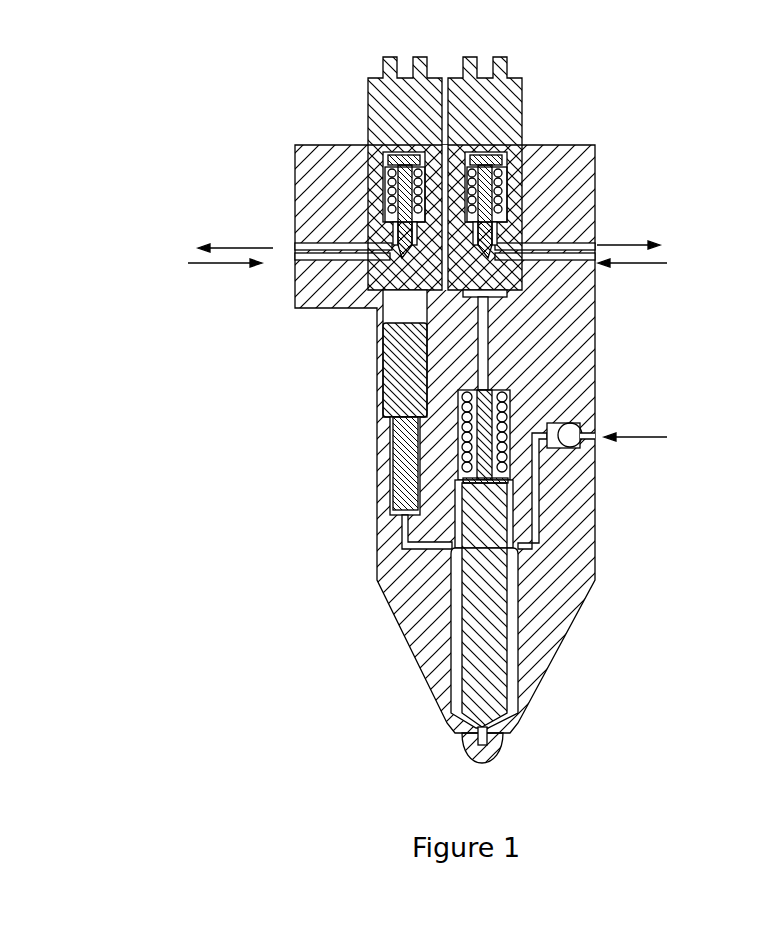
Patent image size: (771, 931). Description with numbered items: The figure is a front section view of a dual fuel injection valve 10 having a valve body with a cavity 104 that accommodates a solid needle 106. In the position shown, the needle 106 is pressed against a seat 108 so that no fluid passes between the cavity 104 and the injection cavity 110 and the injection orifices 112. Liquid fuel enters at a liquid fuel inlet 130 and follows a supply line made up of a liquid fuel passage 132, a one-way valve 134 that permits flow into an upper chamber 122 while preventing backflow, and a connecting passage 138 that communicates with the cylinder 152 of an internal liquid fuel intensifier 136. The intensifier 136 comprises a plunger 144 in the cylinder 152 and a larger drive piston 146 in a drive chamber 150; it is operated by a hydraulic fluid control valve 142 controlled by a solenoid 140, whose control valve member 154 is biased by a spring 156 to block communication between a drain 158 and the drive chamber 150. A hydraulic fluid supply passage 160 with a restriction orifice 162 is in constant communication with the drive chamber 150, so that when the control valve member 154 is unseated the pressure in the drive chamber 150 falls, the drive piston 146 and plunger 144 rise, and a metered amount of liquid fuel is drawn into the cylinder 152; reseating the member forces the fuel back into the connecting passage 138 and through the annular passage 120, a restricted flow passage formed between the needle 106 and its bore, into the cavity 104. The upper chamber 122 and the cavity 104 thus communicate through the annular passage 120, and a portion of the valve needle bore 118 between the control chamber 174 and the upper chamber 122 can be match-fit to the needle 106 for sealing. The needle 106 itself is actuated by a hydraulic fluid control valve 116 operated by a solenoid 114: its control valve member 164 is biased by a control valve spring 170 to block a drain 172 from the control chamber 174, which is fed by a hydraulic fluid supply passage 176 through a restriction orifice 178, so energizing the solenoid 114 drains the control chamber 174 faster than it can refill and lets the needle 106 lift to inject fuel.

The fuel injector 10 is at (658, 92).
The cavity 104 is at (512, 673).
The needle 106 is at (487, 665).
The seat 108 is at (498, 733).
The injection cavity 110 is at (490, 745).
The injection orifices 112 is at (453, 735).
The solenoid 114 is at (500, 105).
The hydraulic fluid control valve 116 is at (522, 160).
The valve needle bore 118 is at (537, 493).
The annular passage 120 is at (410, 565).
The upper chamber 122 is at (520, 568).
The liquid fuel inlet 130 is at (597, 430).
The liquid fuel passage 132 is at (538, 525).
The one-way valve 134 is at (582, 425).
The liquid fuel intensifier 136 is at (377, 395).
The connecting passage 138 is at (405, 545).
The solenoid 140 is at (408, 107).
The hydraulic fluid control valve 142 is at (390, 210).
The plunger 144 is at (395, 450).
The drive piston 146 is at (393, 370).
The drive chamber 150 is at (395, 313).
The cylinder 152 is at (400, 495).
The control valve member 154 is at (400, 155).
The spring 156 is at (392, 180).
The drain 158 is at (395, 250).
The hydraulic fluid supply passage 160 is at (345, 260).
The restriction orifice 162 is at (330, 284).
The control valve member 164 is at (508, 180).
The control valve spring 170 is at (505, 155).
The drain 172 is at (540, 243).
The control chamber 174 is at (510, 400).
The hydraulic fluid supply passage 176 is at (545, 262).
The restriction orifice 178 is at (515, 296).